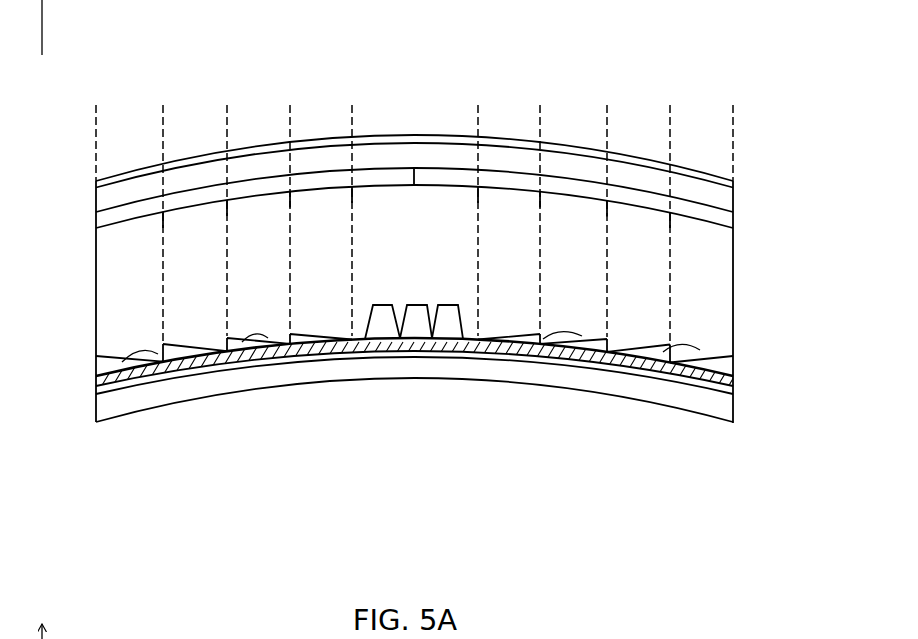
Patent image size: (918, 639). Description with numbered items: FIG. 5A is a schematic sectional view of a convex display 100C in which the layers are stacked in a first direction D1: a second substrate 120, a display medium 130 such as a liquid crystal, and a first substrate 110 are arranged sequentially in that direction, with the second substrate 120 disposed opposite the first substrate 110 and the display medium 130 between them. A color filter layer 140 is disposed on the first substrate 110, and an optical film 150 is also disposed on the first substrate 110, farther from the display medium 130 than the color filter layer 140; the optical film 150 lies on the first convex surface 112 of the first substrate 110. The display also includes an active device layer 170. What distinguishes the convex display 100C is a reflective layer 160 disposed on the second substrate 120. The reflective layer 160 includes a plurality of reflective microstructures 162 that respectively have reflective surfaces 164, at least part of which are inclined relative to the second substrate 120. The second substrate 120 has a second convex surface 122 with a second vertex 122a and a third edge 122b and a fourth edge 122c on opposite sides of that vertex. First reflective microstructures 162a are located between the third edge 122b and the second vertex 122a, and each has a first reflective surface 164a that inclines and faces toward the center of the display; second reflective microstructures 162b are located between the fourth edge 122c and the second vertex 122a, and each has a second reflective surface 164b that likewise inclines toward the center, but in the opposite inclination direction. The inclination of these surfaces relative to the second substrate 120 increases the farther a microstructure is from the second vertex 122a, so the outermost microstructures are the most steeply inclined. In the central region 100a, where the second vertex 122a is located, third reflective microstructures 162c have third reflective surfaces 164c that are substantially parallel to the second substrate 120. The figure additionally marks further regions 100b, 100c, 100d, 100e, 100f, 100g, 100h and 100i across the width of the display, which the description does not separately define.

The convex display 100C is at (422, 335).
The region 100a is at (352, 115).
The first region 100b is at (478, 115).
The second region 100c is at (540, 115).
The third region 100d is at (607, 115).
The fourth region 100e is at (670, 115).
The fifth region 100f is at (290, 115).
The sixth region 100g is at (227, 115).
The seventh region 100h is at (163, 115).
The eighth region 100i is at (96, 115).
The first substrate 110 is at (721, 197).
The first convex surface 112 is at (699, 174).
The second substrate 120 is at (713, 405).
The second convex surface 122 is at (105, 392).
The second vertex 122a is at (417, 346).
The third edge 122b is at (740, 400).
The fourth edge 122c is at (95, 398).
The display medium 130 is at (706, 312).
The color filter layer 140 is at (711, 218).
The optical film 150 is at (727, 178).
The reflective layer 160 is at (739, 365).
The reflective microstructures 162 is at (414, 397).
The first reflective microstructures 162a is at (640, 358).
The second reflective microstructures 162b is at (293, 350).
The third reflective microstructures 162c is at (407, 350).
The reflective surfaces 164 is at (385, 423).
The first reflective surface 164a is at (590, 331).
The second reflective surface 164b is at (112, 350).
The third reflective surface 164c is at (411, 301).
The active device layer 170 is at (739, 393).
The first direction D1 is at (42, 319).